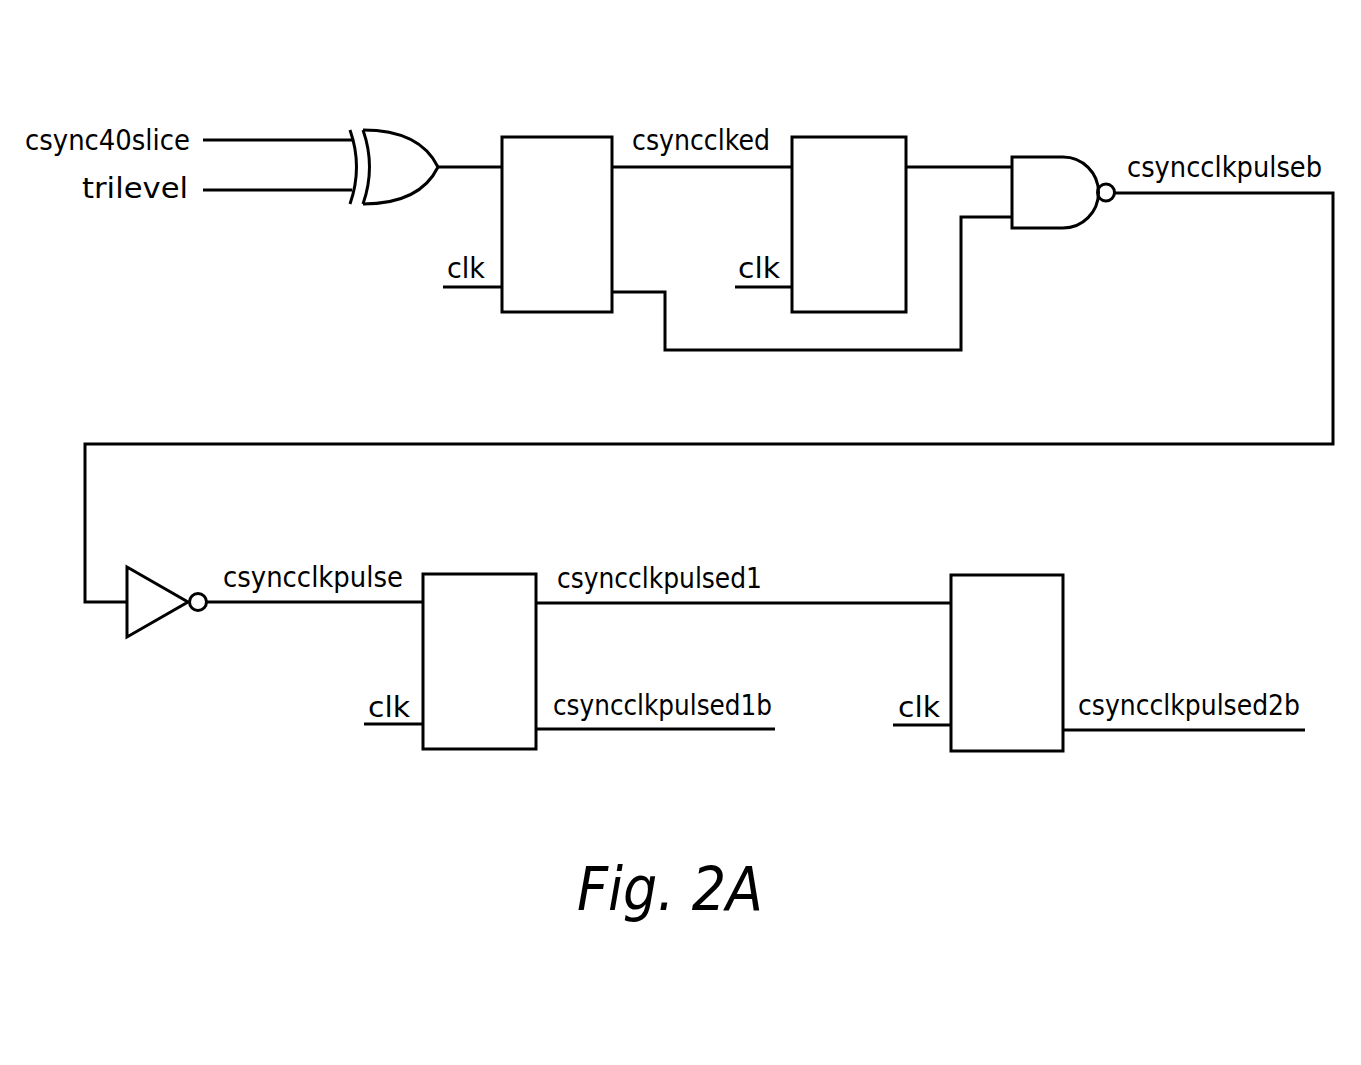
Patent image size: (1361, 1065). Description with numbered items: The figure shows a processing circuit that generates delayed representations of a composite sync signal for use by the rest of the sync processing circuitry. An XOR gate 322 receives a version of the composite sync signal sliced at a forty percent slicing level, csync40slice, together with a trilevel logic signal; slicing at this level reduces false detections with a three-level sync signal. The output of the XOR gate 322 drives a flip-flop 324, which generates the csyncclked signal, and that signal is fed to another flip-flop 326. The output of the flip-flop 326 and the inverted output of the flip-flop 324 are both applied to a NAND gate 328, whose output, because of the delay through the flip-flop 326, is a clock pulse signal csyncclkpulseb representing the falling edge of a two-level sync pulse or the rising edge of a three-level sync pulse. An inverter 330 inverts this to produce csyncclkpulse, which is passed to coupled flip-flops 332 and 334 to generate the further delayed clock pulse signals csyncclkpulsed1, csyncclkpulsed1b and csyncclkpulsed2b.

The XOR gate 322 is at (401, 130).
The flip-flop 324 is at (562, 137).
The flip-flop 326 is at (852, 137).
The NAND gate 328 is at (1040, 157).
The inverter 330 is at (160, 583).
The flip-flop 332 is at (483, 574).
The flip-flop 334 is at (1011, 575).